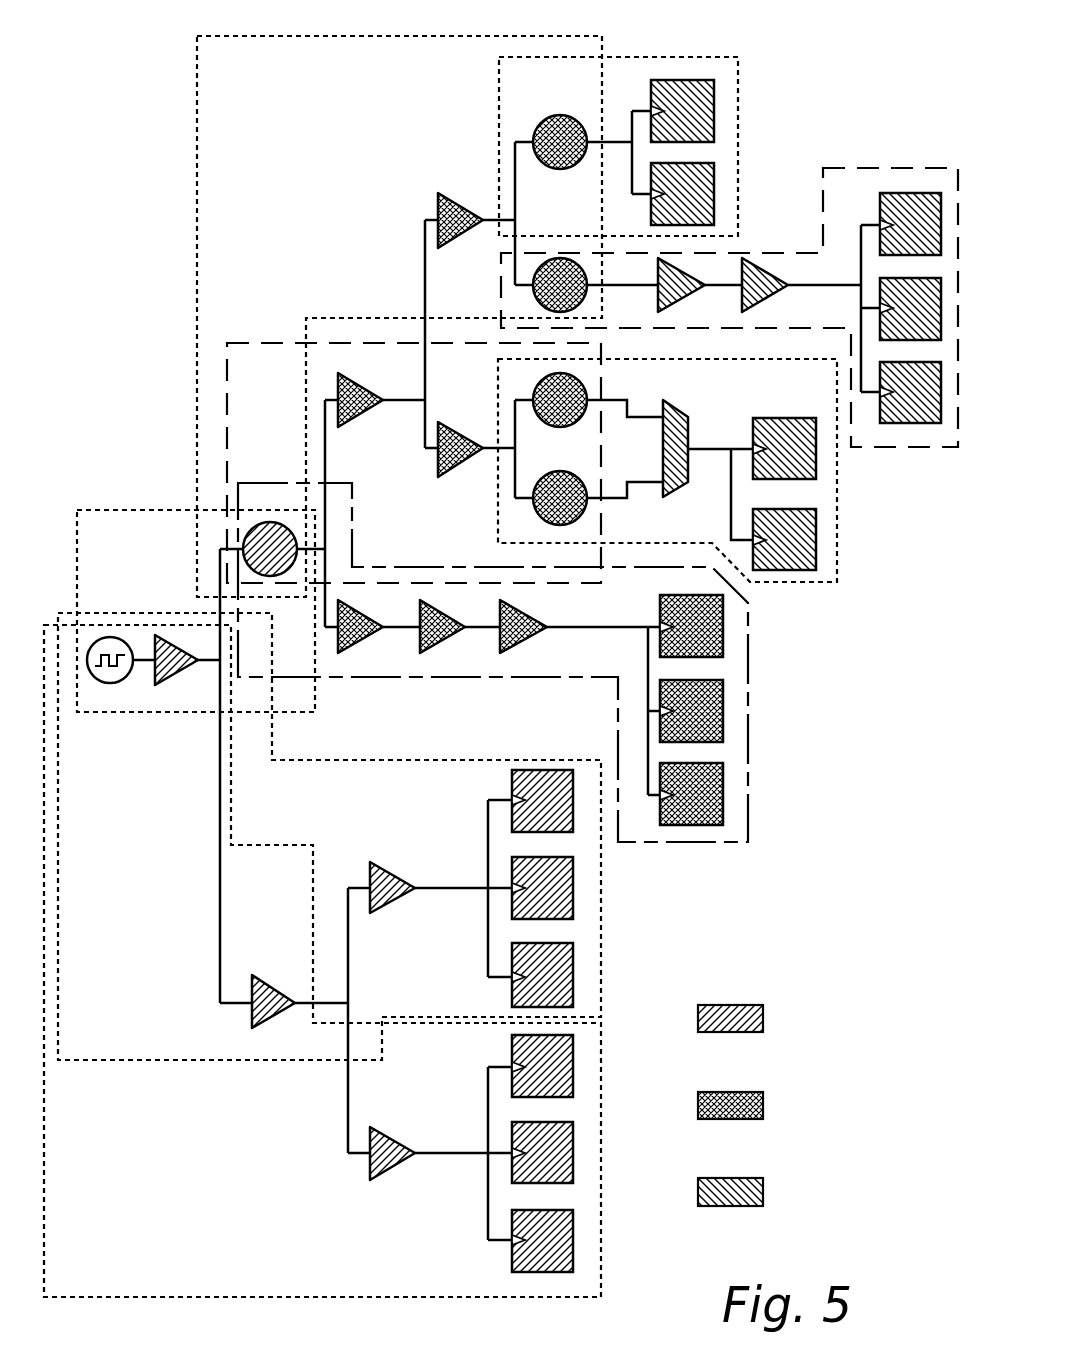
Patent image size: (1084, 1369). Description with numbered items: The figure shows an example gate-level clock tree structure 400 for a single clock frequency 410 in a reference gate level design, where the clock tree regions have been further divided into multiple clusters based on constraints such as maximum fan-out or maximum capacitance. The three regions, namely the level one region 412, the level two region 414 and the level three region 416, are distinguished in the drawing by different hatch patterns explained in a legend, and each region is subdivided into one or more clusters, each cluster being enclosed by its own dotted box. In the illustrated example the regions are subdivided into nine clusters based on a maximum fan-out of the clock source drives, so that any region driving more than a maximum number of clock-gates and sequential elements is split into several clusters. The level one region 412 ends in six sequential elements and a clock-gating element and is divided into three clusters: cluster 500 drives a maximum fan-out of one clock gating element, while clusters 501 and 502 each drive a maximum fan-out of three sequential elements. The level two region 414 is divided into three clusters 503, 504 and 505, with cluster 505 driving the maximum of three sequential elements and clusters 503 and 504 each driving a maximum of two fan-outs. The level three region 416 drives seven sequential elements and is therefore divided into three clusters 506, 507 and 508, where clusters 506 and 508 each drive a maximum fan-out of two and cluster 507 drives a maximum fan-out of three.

The gate-level clock tree structure 400 is at (152, 54).
The single clock frequency 410 is at (112, 637).
The level 1 region 412 is at (712, 1005).
The level 2 region 414 is at (712, 1092).
The level 3 region 416 is at (712, 1178).
The cluster 500 is at (146, 510).
The cluster 501 is at (183, 1060).
The cluster 502 is at (196, 1297).
The cluster 503 is at (197, 207).
The cluster 504 is at (286, 343).
The cluster 505 is at (380, 567).
The cluster 506 is at (742, 100).
The cluster 507 is at (858, 168).
The cluster 508 is at (838, 503).